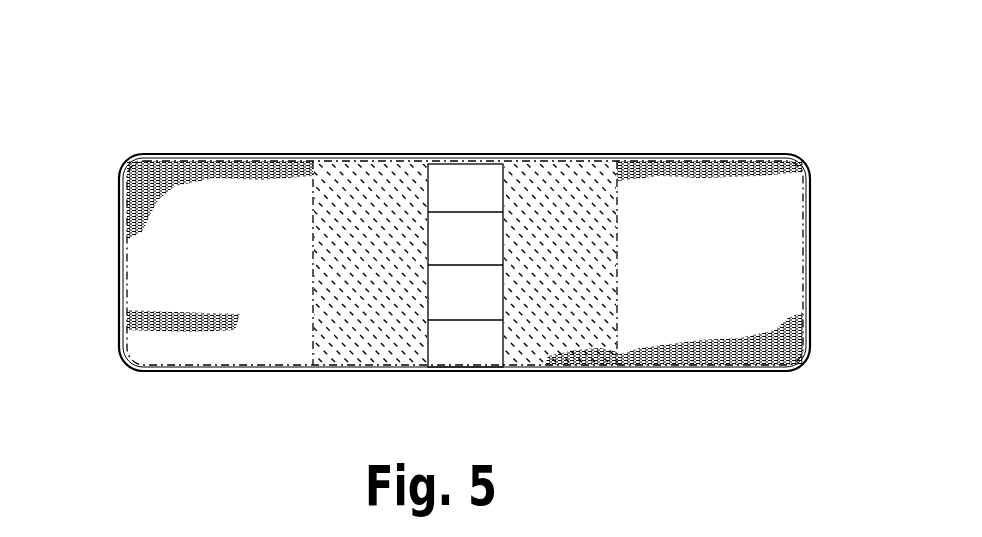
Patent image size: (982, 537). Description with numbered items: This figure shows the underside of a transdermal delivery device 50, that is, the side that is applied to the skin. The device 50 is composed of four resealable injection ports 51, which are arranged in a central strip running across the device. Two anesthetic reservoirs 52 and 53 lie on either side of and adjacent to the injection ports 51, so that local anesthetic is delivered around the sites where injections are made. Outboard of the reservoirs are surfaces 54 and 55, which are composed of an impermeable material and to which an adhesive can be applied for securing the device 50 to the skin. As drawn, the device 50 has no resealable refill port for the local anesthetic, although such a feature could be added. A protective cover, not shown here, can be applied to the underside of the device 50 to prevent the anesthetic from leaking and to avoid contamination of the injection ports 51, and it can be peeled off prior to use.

The device 50 is at (675, 100).
The resealable injection ports 51 is at (467, 235).
The anesthetic reservoir 52 is at (380, 340).
The anesthetic reservoir 53 is at (557, 353).
The surface 54 is at (163, 283).
The surface 55 is at (762, 265).